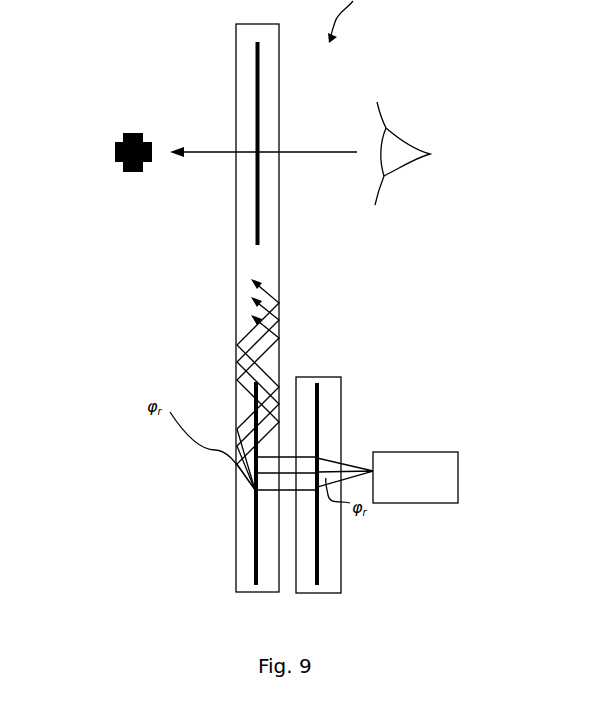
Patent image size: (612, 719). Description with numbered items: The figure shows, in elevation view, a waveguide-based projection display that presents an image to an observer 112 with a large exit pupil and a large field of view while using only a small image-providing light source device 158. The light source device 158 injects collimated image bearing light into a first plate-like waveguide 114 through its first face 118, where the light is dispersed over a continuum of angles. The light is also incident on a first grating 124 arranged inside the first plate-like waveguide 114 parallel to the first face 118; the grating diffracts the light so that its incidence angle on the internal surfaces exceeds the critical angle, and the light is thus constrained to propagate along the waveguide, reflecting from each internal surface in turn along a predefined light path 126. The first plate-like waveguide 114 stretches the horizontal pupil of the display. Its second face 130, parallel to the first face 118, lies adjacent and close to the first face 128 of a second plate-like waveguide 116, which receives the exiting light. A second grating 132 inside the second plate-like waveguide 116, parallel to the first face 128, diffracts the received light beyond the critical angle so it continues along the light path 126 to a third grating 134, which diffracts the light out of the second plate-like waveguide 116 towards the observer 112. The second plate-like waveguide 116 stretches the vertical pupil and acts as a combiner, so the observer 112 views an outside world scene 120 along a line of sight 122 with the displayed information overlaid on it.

The observer 112 is at (392, 160).
The first plate-like waveguide 114 is at (330, 448).
The second plate-like waveguide 116 is at (268, 258).
The first face 118 is at (341, 568).
The outside world scene 120 is at (133, 135).
The line of sight 122 is at (200, 155).
The first grating 124 is at (318, 525).
The predefined light path 126 is at (237, 338).
The first face 128 is at (288, 408).
The second face 130 is at (292, 405).
The second grating 132 is at (256, 552).
The third grating 134 is at (258, 86).
The image-providing light source device 158 is at (425, 470).